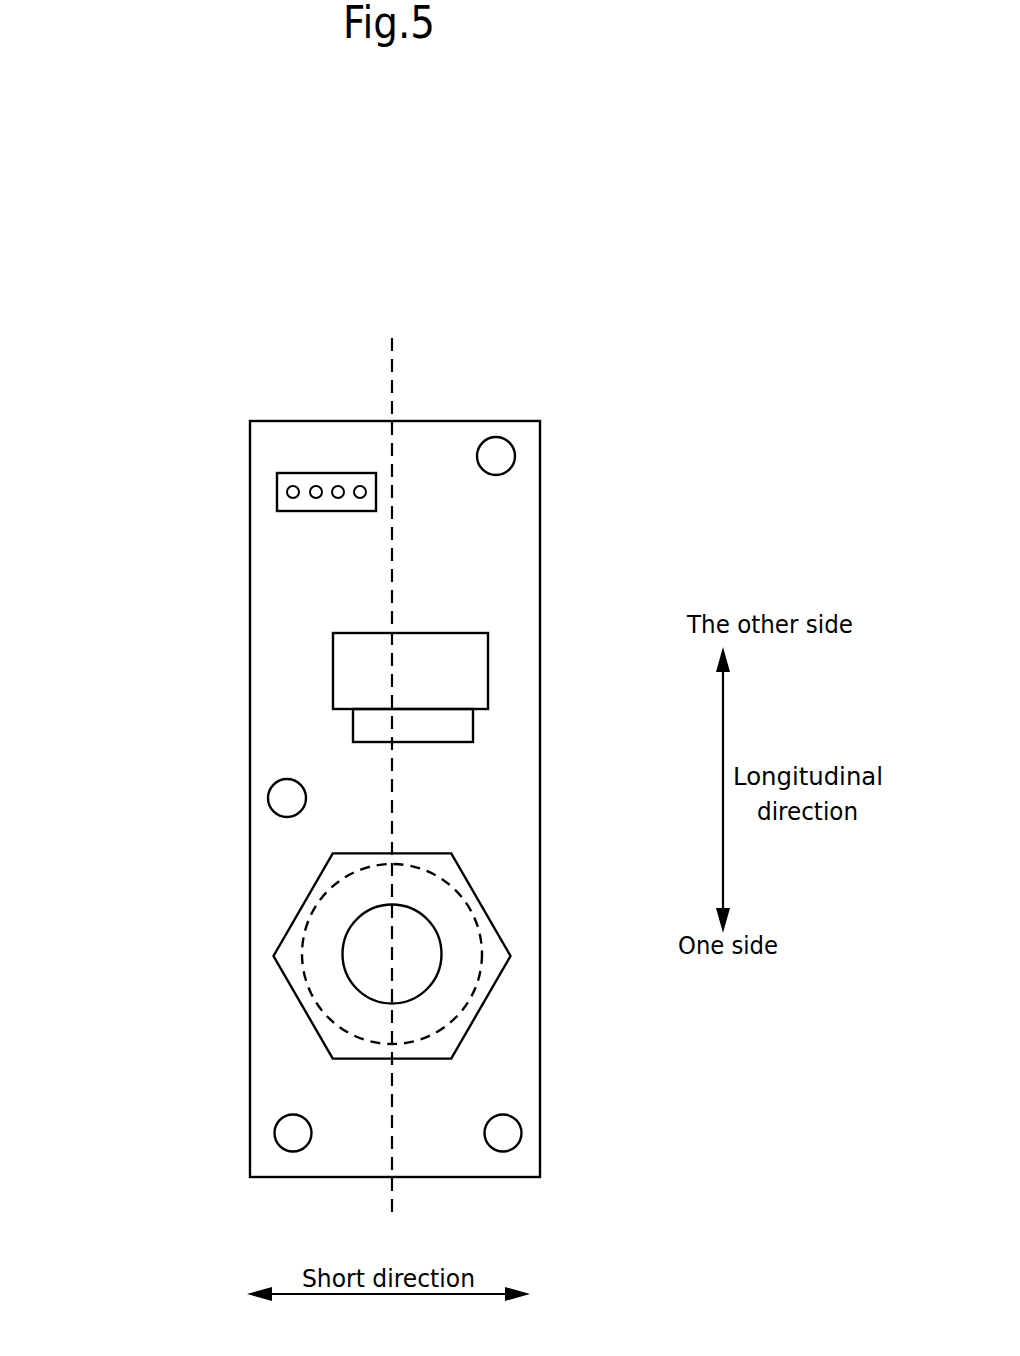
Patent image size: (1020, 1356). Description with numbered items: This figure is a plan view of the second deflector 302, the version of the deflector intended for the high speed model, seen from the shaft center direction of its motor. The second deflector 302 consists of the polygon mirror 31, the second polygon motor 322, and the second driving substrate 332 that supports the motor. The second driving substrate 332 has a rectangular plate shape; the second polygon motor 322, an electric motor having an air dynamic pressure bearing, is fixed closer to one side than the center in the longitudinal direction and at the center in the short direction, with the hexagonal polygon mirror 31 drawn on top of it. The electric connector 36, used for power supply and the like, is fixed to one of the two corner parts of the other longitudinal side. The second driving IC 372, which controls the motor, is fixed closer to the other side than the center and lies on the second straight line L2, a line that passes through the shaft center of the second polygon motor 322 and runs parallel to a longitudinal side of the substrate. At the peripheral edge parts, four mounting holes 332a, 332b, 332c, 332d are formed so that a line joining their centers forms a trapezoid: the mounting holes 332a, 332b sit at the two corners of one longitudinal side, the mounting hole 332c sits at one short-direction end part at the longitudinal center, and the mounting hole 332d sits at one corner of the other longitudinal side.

The second straight line L2 is at (388, 370).
The second deflector 302 is at (558, 617).
The second driving substrate 332 is at (412, 750).
The mounting hole 332a is at (509, 1118).
The mounting hole 332b is at (293, 1116).
The mounting hole 332c is at (284, 780).
The mounting hole 332d is at (513, 463).
The electric connector 36 is at (277, 492).
The second driving IC 372 is at (354, 661).
The polygon mirror 31 is at (493, 927).
The second polygon motor 322 is at (467, 1002).